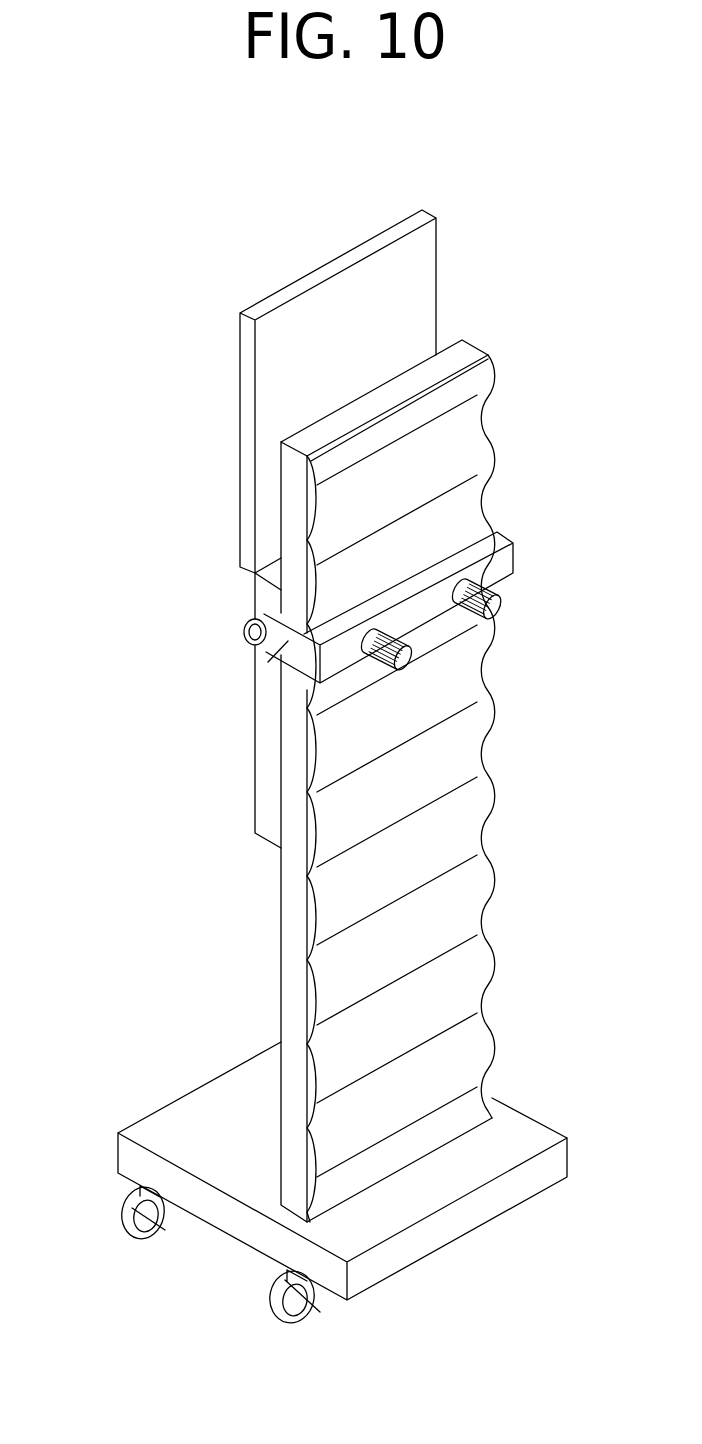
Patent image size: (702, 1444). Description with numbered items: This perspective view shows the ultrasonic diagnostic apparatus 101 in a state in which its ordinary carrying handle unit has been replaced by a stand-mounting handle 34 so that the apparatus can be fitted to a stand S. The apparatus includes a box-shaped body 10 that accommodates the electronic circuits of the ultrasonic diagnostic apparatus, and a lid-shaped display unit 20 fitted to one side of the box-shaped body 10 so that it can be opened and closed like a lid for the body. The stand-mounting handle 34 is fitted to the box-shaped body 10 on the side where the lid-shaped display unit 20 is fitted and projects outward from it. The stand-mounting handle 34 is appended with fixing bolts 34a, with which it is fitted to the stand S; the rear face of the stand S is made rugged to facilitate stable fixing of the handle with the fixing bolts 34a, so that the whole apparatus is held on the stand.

The ultrasonic diagnostic apparatus 101 is at (163, 360).
The box-shaped body 10 is at (263, 813).
The lid-shaped display unit 20 is at (270, 497).
The stand-mounting handle 34 is at (250, 650).
The fixing bolts 34a is at (410, 665).
The stand S is at (477, 883).